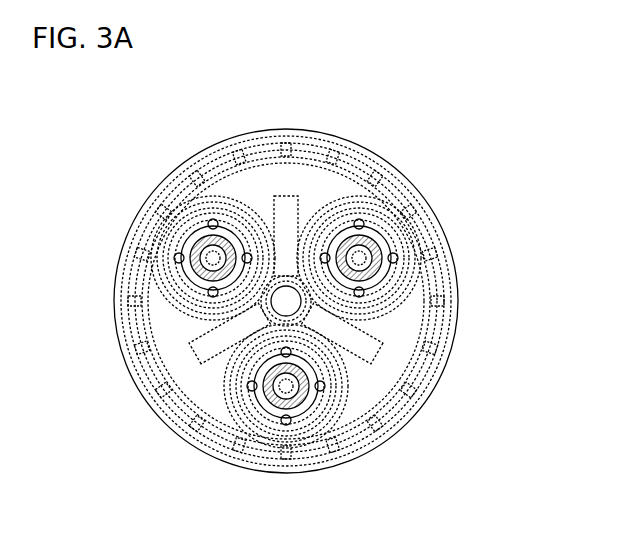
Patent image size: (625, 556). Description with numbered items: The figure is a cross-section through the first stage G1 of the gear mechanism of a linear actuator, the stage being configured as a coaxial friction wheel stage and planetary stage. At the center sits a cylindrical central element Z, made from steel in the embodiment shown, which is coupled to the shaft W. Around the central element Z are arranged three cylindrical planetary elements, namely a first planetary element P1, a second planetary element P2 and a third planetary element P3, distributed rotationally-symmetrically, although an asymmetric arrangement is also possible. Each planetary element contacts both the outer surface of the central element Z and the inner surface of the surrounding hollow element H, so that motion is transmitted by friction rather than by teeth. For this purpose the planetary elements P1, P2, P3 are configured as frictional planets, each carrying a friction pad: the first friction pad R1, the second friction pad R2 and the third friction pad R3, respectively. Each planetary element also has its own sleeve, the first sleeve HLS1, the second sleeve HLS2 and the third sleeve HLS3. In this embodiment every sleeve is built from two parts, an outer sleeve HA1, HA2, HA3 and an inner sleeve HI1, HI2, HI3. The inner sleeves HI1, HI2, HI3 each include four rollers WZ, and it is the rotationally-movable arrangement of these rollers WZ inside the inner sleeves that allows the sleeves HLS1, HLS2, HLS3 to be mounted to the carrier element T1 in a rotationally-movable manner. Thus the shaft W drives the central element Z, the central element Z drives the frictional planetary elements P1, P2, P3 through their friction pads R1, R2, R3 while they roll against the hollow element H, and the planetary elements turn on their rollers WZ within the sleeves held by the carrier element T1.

The first stage G1 is at (172, 121).
The hollow element H is at (440, 263).
The carrier element T1 is at (208, 254).
The shaft W is at (286, 301).
The central element Z is at (285, 275).
The first cylindrical planetary element P1 is at (231, 206).
The second cylindrical planetary element P2 is at (355, 204).
The third cylindrical planetary element P3 is at (345, 413).
The first sleeve HLS1 is at (178, 270).
The second sleeve HLS2 is at (400, 268).
The third sleeve HLS3 is at (280, 413).
The inner sleeve HI1 is at (180, 236).
The inner sleeve HI2 is at (397, 197).
The inner sleeve HI3 is at (307, 413).
The outer sleeve HA1 is at (178, 282).
The outer sleeve HA2 is at (357, 205).
The outer sleeve HA3 is at (277, 427).
The first friction pad R1 is at (240, 204).
The second friction pad R2 is at (352, 307).
The third friction pad R3 is at (247, 350).
The rollers WZ is at (393, 258).